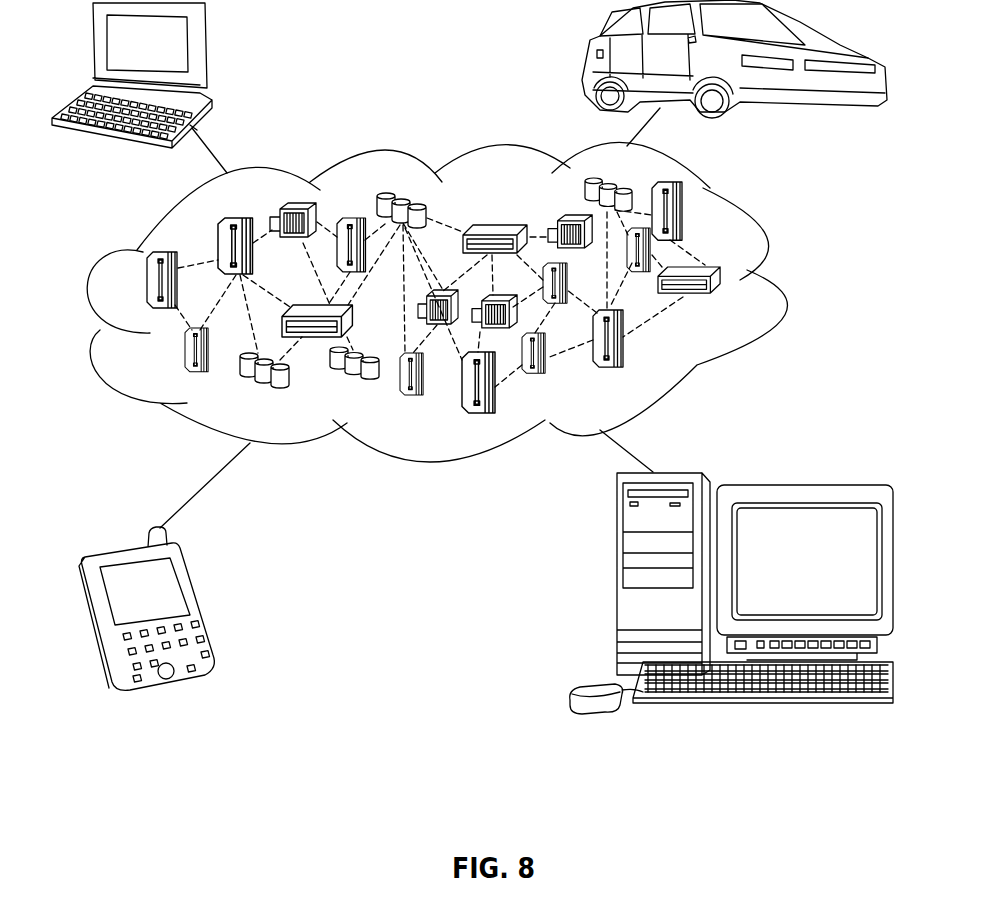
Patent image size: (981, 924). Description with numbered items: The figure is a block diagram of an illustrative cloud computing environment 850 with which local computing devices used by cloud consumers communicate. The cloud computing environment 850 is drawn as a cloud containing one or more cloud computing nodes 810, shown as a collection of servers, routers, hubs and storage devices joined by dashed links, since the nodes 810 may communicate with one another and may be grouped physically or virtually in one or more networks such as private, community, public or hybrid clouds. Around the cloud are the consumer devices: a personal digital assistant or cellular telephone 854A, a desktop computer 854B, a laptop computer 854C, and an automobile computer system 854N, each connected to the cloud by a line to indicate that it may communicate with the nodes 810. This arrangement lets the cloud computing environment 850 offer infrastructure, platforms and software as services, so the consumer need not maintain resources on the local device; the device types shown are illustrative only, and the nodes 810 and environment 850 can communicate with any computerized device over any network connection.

The cloud computing nodes 810 is at (747, 302).
The cloud computing environment 850 is at (768, 243).
The personal digital assistant (PDA) or cellular telephone 854A is at (197, 603).
The desktop computer 854B is at (617, 582).
The laptop computer 854C is at (207, 48).
The automobile computer system 854N is at (588, 52).